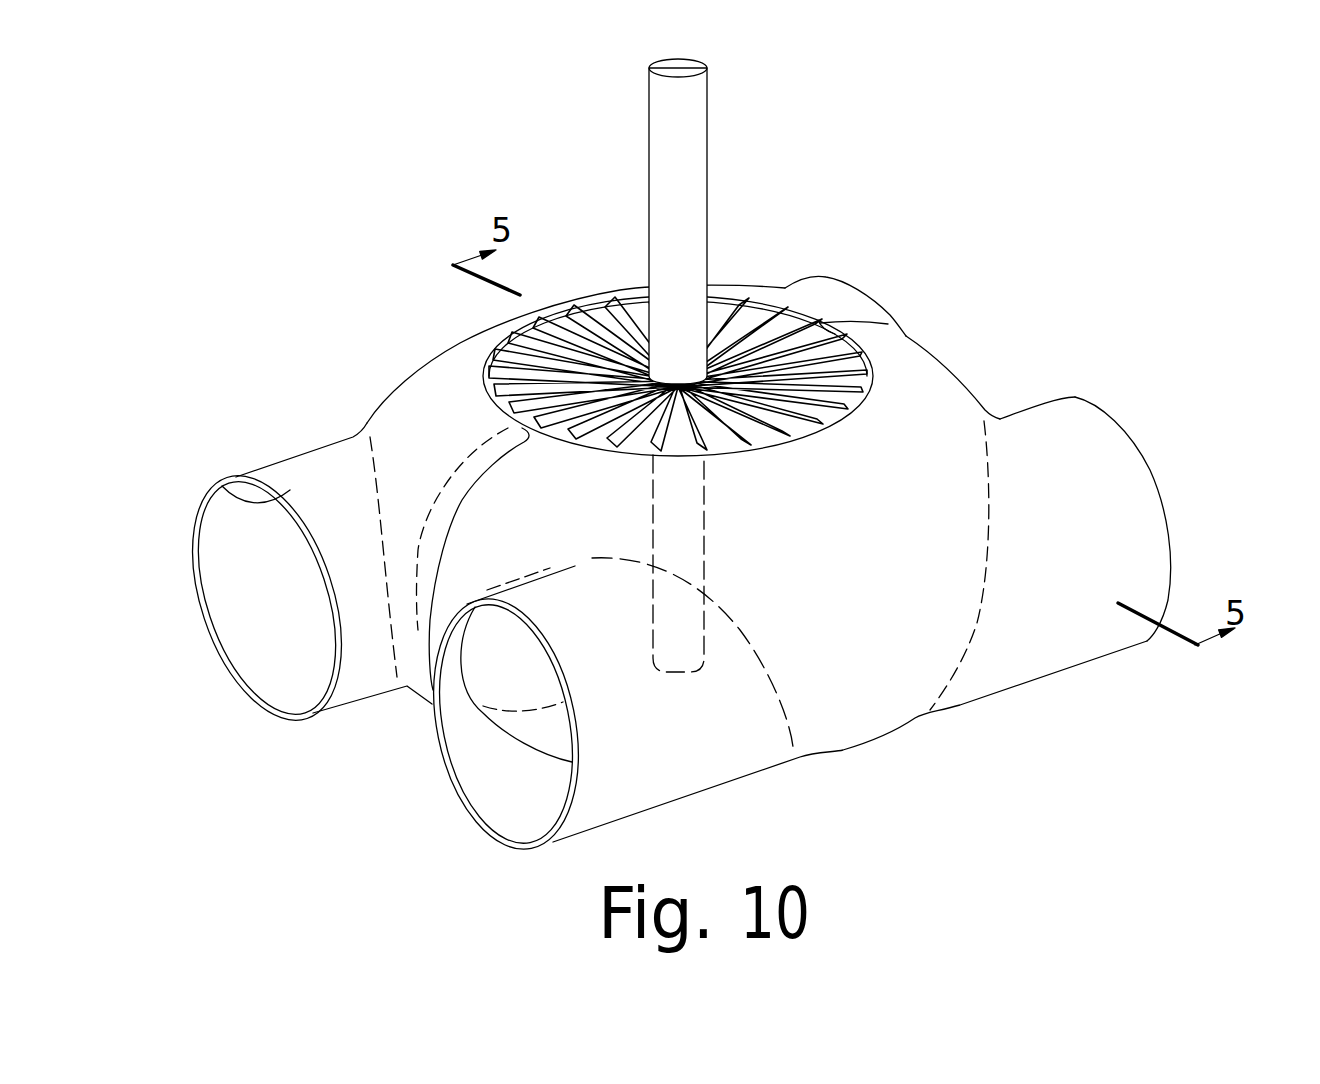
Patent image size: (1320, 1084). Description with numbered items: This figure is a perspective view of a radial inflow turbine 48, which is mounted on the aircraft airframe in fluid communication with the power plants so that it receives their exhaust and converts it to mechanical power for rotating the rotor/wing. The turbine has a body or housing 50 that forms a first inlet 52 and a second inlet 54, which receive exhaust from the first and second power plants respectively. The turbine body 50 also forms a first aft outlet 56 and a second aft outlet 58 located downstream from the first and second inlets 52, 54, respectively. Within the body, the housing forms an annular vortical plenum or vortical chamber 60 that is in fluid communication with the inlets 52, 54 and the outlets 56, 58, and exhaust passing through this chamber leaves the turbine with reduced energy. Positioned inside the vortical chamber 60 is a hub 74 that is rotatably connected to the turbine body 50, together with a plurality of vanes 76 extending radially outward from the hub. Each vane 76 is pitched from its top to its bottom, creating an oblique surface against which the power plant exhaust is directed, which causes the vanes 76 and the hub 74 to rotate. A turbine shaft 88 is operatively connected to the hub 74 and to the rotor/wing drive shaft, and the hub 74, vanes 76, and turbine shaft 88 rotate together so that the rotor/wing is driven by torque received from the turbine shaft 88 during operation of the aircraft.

The radial inflow turbine 48 is at (936, 135).
The turbine body 50 is at (422, 360).
The first inlet 52 is at (222, 486).
The second inlet 54 is at (487, 817).
The first aft outlet 56 is at (870, 292).
The second aft outlet 58 is at (1112, 417).
The vortical chamber 60 is at (678, 337).
The hub 74 is at (703, 538).
The vanes 76 is at (612, 292).
The turbine shaft 88 is at (707, 180).